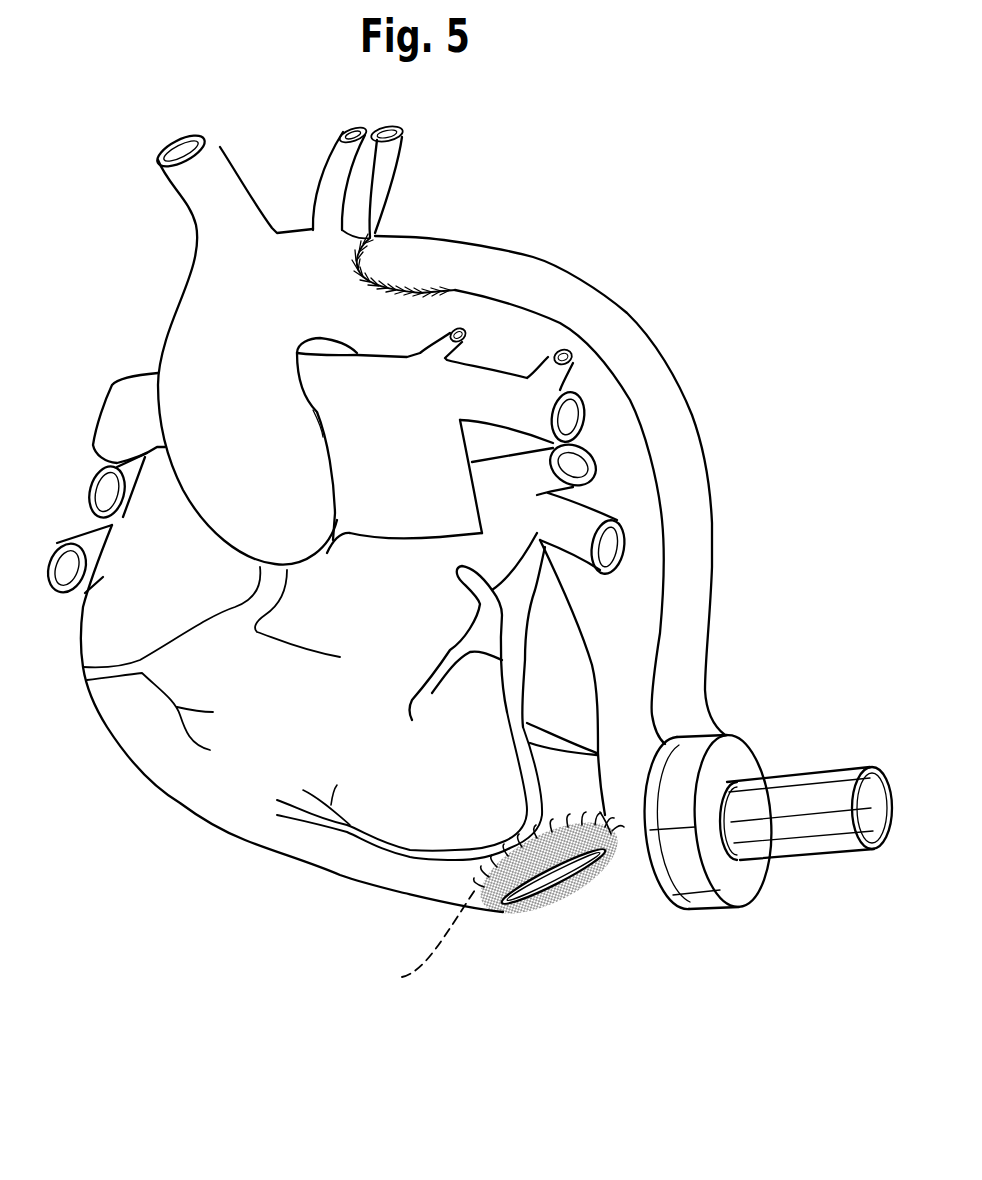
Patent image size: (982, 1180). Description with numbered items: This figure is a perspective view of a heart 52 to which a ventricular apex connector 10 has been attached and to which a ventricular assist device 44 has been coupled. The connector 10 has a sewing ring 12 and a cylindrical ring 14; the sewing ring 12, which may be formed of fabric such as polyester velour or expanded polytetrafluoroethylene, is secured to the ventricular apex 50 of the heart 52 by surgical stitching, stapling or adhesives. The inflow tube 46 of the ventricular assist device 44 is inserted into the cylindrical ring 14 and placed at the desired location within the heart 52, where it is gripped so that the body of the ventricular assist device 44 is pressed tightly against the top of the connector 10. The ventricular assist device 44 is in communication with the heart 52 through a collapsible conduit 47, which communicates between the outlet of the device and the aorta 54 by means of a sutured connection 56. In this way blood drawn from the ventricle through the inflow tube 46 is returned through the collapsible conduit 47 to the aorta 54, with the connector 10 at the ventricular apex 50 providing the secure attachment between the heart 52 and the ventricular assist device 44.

The ventricular apex connector 10 is at (508, 905).
The sewing ring 12 is at (421, 941).
The cylindrical ring 14 is at (565, 895).
The ventricular assist device 44 is at (700, 908).
The inflow tube 46 is at (797, 790).
The collapsible conduit 47 is at (523, 268).
The ventricular apex 50 is at (605, 815).
The heart 52 is at (295, 792).
The aorta 54 is at (218, 332).
The sutured connection 56 is at (370, 238).